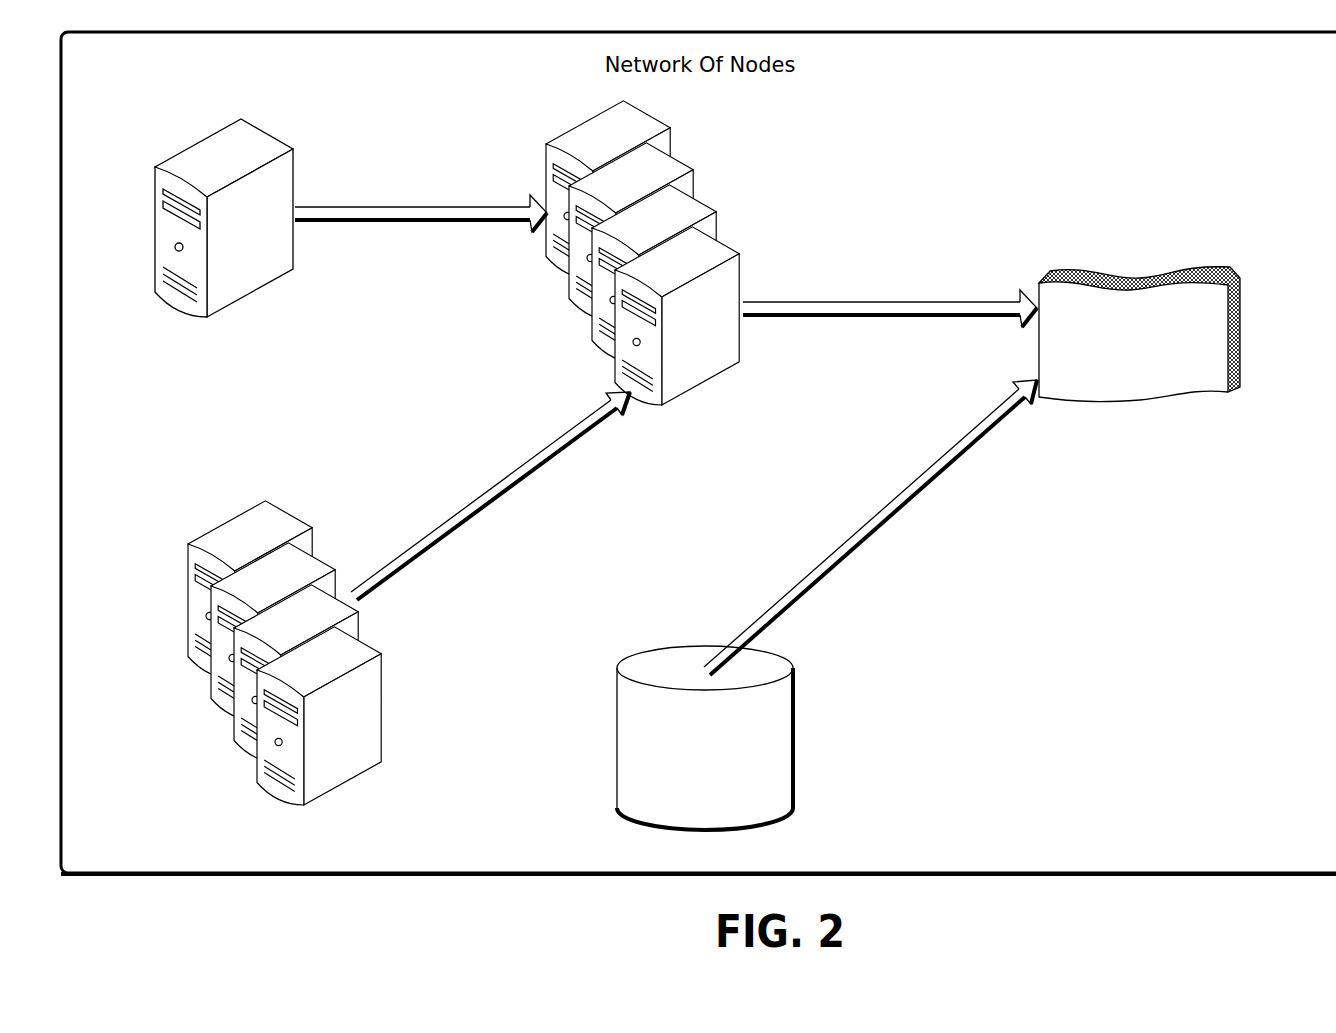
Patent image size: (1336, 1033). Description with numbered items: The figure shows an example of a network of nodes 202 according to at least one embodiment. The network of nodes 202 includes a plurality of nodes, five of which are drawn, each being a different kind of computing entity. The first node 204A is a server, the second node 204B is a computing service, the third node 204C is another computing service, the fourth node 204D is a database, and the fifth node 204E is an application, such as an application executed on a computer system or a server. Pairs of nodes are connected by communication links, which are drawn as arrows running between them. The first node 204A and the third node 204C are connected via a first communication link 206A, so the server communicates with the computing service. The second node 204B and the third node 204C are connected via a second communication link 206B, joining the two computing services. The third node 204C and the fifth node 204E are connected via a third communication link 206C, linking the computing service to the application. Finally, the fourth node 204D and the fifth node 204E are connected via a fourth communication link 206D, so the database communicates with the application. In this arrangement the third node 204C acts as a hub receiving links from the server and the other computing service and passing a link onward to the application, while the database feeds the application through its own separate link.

The network of nodes 202 is at (1326, 66).
The first node 204A is at (258, 287).
The second node 204B is at (372, 763).
The third node 204C is at (740, 351).
The fourth node 204D is at (793, 766).
The fifth node 204E is at (1228, 394).
The first communication link 206A is at (340, 221).
The second communication link 206B is at (405, 571).
The third communication link 206C is at (828, 316).
The fourth communication link 206D is at (803, 594).